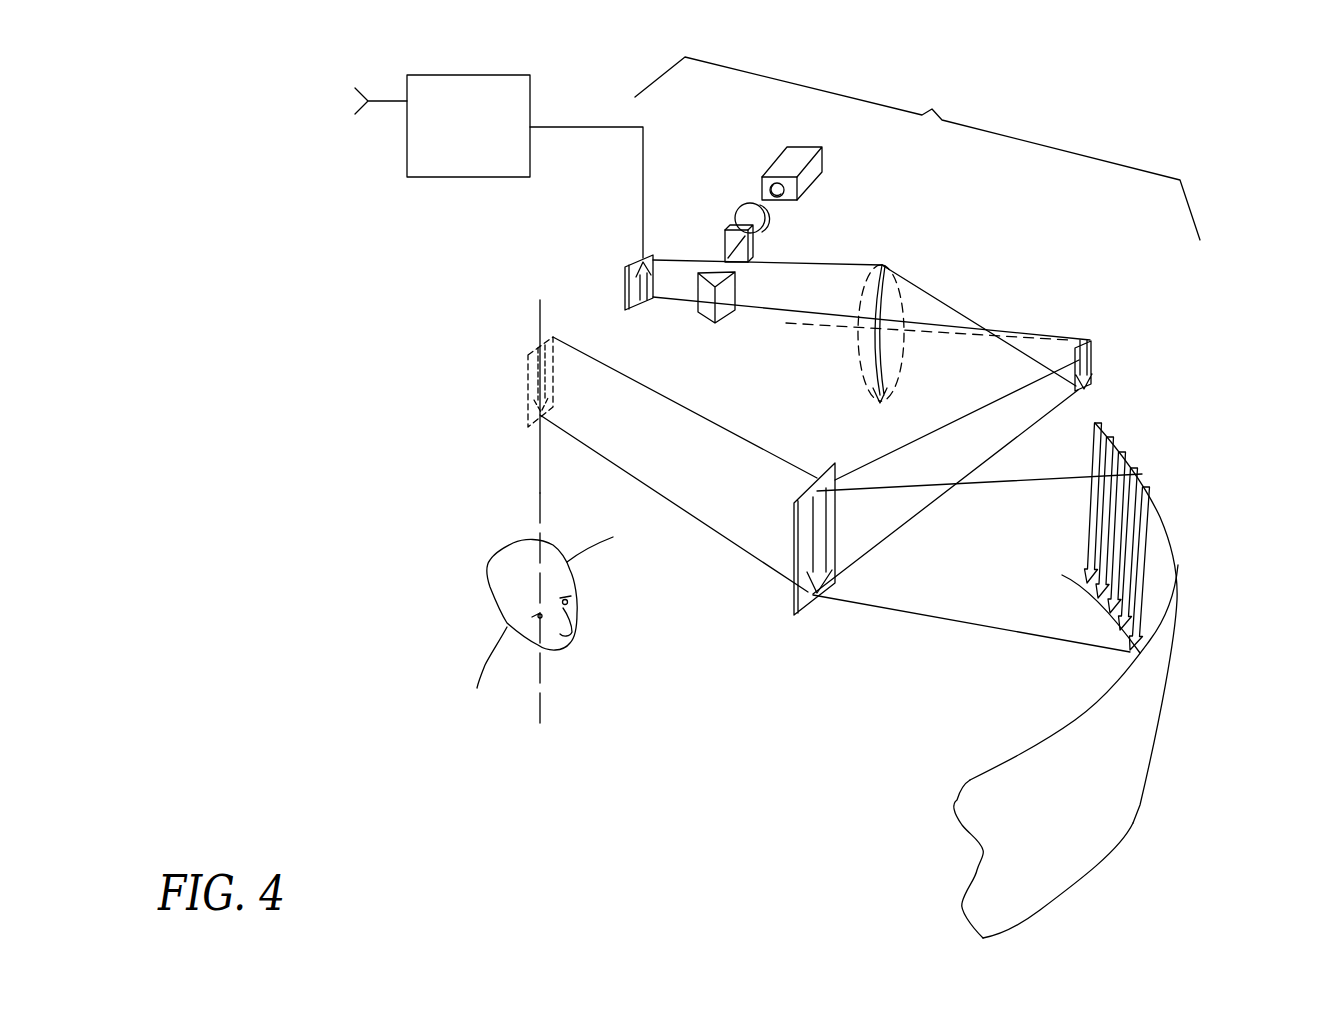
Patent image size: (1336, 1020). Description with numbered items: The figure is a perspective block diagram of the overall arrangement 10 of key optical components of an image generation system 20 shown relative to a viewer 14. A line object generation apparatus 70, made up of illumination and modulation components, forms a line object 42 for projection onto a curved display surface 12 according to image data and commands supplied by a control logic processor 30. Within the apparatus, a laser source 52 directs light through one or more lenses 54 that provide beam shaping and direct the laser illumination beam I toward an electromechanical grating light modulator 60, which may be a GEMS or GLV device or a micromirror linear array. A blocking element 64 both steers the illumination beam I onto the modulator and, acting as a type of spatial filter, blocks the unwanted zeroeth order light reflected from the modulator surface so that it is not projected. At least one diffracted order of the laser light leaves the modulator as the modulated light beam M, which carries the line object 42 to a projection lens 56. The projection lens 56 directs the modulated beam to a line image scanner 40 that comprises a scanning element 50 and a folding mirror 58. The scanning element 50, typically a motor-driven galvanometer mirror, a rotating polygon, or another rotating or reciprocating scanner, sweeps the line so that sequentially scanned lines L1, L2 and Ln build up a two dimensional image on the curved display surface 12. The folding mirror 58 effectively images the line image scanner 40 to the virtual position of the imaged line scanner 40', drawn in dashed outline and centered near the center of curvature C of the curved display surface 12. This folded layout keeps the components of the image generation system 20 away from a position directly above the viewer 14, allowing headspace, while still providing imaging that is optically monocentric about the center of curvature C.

The imaging system 10 is at (302, 120).
The curved display surface 12 is at (1157, 700).
The viewer 14 is at (488, 657).
The image generation system 20 is at (752, 730).
The control logic processor 30 is at (489, 141).
The line image scanner 40 is at (1185, 344).
The imaged line scanner 40' is at (608, 451).
The line object 42 is at (625, 287).
The scanning element 50 is at (1087, 338).
The laser source 52 is at (810, 181).
The lenses 54 is at (731, 207).
The projection lens 56 is at (863, 363).
The folding mirror 58 is at (806, 612).
The electromechanical grating light modulator 60 is at (631, 264).
The blocking element 64 is at (725, 318).
The line object generation apparatus 70 is at (917, 148).
The center of curvature C is at (538, 498).
The laser illumination beam I is at (677, 258).
The modulated light beam M is at (927, 286).
The scanned line L1 is at (1095, 423).
The scanned line L2 is at (1112, 440).
The scanned line Ln is at (1146, 488).